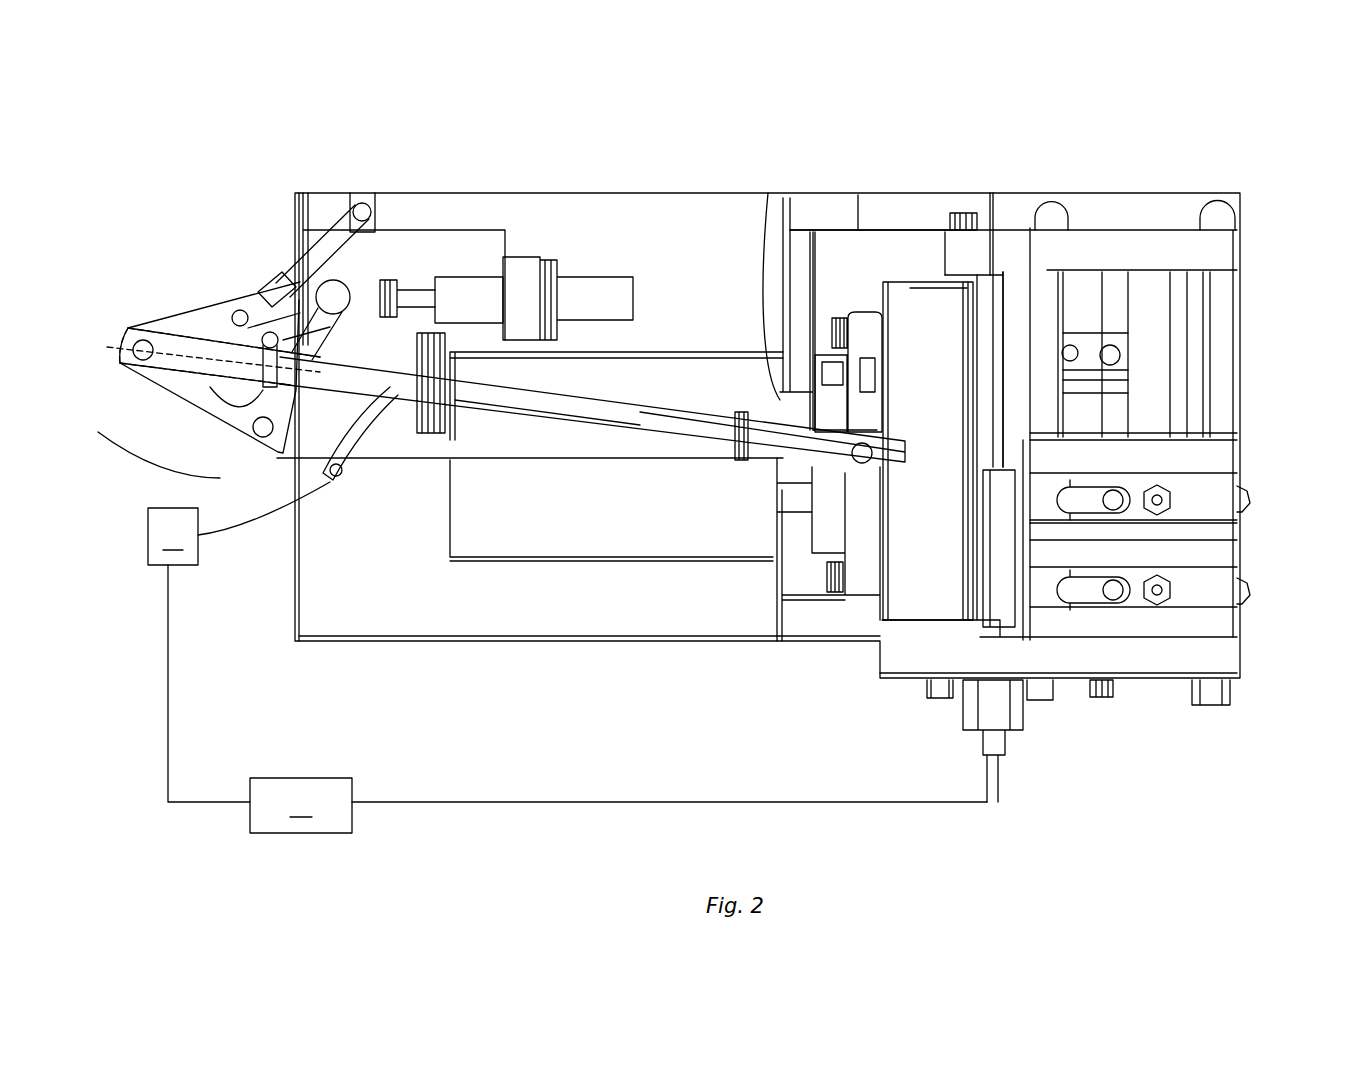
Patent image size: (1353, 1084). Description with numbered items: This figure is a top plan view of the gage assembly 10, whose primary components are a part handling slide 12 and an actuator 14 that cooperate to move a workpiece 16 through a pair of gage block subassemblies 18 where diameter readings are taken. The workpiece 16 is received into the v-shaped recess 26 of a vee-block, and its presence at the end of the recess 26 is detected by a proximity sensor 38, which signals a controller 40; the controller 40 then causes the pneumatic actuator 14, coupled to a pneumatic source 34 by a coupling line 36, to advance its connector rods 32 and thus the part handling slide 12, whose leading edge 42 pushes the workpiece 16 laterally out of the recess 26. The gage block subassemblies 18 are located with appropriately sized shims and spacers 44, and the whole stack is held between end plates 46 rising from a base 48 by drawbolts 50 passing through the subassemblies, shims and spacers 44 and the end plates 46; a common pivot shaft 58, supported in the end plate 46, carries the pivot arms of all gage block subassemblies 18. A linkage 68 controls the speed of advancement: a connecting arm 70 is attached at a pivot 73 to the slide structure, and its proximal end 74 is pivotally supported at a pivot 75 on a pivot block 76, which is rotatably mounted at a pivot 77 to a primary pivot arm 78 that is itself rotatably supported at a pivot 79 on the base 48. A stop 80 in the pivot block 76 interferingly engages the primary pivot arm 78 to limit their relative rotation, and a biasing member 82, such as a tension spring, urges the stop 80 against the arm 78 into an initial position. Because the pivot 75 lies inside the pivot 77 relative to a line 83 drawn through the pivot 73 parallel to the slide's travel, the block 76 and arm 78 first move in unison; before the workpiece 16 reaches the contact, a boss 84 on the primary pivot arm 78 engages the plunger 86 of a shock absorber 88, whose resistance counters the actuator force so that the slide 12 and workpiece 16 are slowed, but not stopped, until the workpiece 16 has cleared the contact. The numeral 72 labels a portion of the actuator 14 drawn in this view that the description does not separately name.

The gage assembly 10 is at (650, 150).
The part handling slide 12 is at (893, 580).
The actuator 14 is at (490, 540).
The workpiece 16 is at (1000, 578).
The gage block subassemblies 18 is at (1212, 498).
The recess 26 is at (983, 337).
The connector rods 32 is at (767, 195).
The pneumatic source 34 is at (239, 523).
The coupling line 36 is at (347, 473).
The proximity sensor 38 is at (1023, 717).
The controller 40 is at (577, 699).
The leading edge 42 is at (970, 352).
The shims and spacers 44 is at (1226, 450).
The end plates 46 is at (1165, 250).
The base 48 is at (523, 617).
The drawbolts 50 is at (997, 323).
The pivot shaft 58 is at (1180, 345).
The linkage 68 is at (272, 235).
The connecting arm 70 is at (648, 410).
The cylinder bore 72 is at (818, 230).
The pivot 73 is at (878, 430).
The proximal end 74 is at (190, 370).
The pivot 75 is at (143, 340).
The pivot block 76 is at (212, 303).
The pivot 77 is at (263, 430).
The primary pivot arm 78 is at (345, 283).
The pivot 79 is at (364, 203).
The stop 80 is at (238, 302).
The biasing member 82 is at (293, 265).
The line 83 is at (647, 460).
The boss 84 is at (398, 282).
The plunger 86 is at (477, 287).
The shock absorber 88 is at (523, 257).